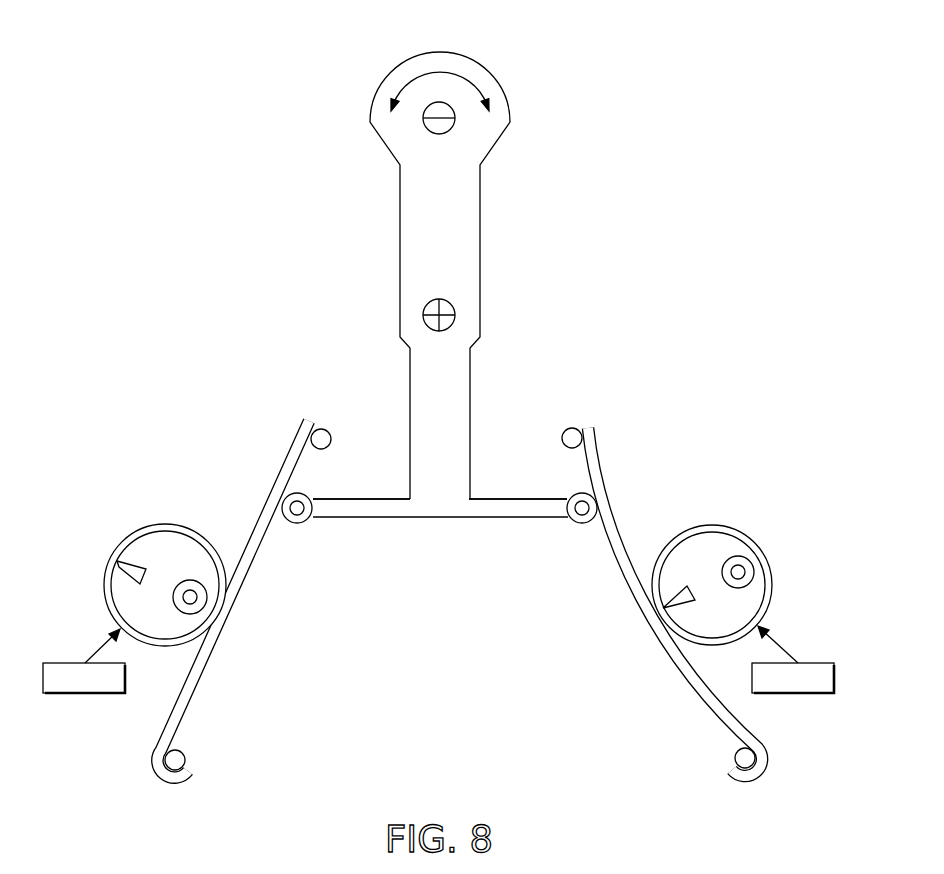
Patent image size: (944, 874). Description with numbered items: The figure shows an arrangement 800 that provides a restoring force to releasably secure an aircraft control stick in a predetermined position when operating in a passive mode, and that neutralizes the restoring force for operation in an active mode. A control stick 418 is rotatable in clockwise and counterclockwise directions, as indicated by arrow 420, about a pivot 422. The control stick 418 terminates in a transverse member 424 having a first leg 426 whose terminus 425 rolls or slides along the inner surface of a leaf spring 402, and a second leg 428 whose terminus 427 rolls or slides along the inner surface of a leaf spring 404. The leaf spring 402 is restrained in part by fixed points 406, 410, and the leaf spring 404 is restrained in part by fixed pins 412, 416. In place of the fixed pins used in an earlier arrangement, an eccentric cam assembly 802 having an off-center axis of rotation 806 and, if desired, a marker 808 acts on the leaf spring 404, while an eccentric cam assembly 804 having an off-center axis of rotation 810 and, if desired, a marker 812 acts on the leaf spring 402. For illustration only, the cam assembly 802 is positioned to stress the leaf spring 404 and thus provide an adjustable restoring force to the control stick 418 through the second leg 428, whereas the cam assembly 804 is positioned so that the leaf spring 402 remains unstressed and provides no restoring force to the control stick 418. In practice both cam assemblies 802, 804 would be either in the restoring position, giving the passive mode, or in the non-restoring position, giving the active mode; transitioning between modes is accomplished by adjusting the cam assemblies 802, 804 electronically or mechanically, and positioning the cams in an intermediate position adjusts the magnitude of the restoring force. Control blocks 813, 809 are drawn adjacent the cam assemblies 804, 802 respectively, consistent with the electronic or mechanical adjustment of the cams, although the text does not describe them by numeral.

The arrangement 800 is at (580, 241).
The leaf spring 402 is at (222, 636).
The leaf spring 404 is at (658, 636).
The fixed point 406 is at (186, 760).
The fixed pin 412 is at (735, 758).
The fixed point 410 is at (331, 439).
The fixed pin 416 is at (562, 438).
The control stick 418 is at (420, 258).
The arrow 420 is at (440, 73).
The pivot 422 is at (426, 323).
The transverse member 424 is at (443, 518).
The terminus 425 is at (304, 528).
The first leg 426 is at (357, 506).
The terminus 427 is at (578, 528).
The second leg 428 is at (523, 506).
The eccentric cam assembly 802 is at (715, 525).
The eccentric cam assembly 804 is at (164, 524).
The off-center axis of rotation 806 is at (752, 572).
The marker 808 is at (683, 588).
The second controller 809 is at (795, 693).
The off-center axis of rotation 810 is at (189, 590).
The marker 812 is at (118, 560).
The first controller 813 is at (83, 693).